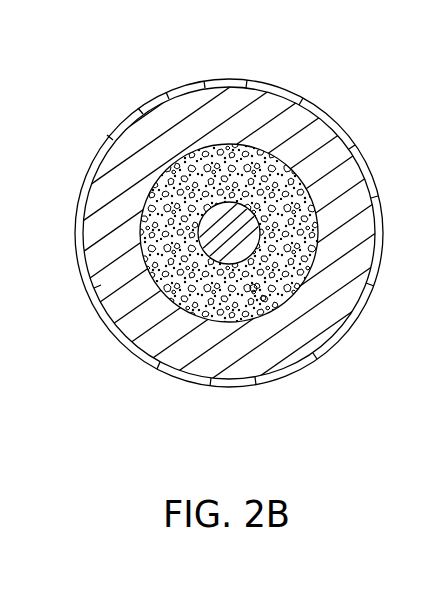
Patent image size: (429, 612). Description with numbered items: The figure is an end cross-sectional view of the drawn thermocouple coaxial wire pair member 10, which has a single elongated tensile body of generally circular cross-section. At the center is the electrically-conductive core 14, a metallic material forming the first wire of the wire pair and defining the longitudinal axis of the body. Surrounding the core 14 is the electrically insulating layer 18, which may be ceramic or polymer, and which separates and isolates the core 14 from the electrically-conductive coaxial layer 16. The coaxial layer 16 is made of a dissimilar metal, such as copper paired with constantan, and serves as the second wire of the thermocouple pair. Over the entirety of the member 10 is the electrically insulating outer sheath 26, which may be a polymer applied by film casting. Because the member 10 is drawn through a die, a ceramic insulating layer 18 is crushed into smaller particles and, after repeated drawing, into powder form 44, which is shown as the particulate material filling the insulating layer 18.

The drawn thermocouple coaxial wire pair member 10 is at (243, 258).
The electrically-conductive core 14 is at (259, 238).
The electrically-conductive coaxial layer 16 is at (307, 117).
The electrically insulating layer 18 is at (312, 190).
The electrically insulating outer sheath 26 is at (229, 79).
The powder form 44 is at (257, 292).